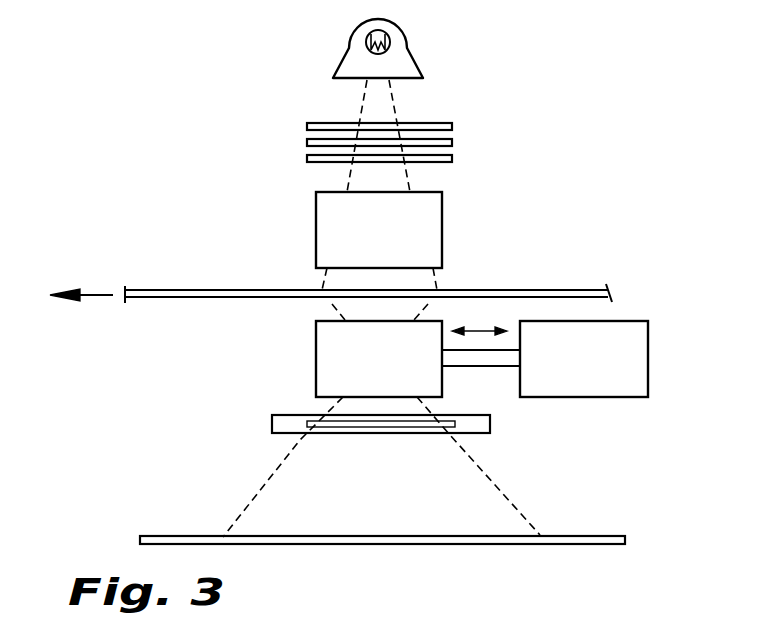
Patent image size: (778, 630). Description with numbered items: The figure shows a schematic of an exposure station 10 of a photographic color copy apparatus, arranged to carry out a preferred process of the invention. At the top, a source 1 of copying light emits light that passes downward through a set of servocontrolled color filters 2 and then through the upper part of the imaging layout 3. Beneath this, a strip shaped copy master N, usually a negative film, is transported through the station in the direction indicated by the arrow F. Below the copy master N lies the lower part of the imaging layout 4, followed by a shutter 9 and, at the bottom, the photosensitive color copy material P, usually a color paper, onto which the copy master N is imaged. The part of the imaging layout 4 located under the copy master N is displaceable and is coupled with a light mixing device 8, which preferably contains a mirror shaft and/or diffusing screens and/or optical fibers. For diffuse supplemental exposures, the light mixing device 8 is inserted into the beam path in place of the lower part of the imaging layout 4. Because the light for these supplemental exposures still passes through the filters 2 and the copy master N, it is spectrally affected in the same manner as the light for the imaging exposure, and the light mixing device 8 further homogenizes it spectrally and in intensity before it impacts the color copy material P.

The exposure station 10 is at (168, 112).
The source of copying light 1 is at (389, 47).
The set of servocontrolled color filters 2 is at (281, 112).
The imaging layout 3 is at (328, 232).
The copy master N is at (183, 290).
The direction of transport F is at (81, 282).
The imaging layout 4 is at (330, 362).
The light mixing device 8 is at (594, 383).
The shutter 9 is at (278, 427).
The color copy material P is at (170, 536).